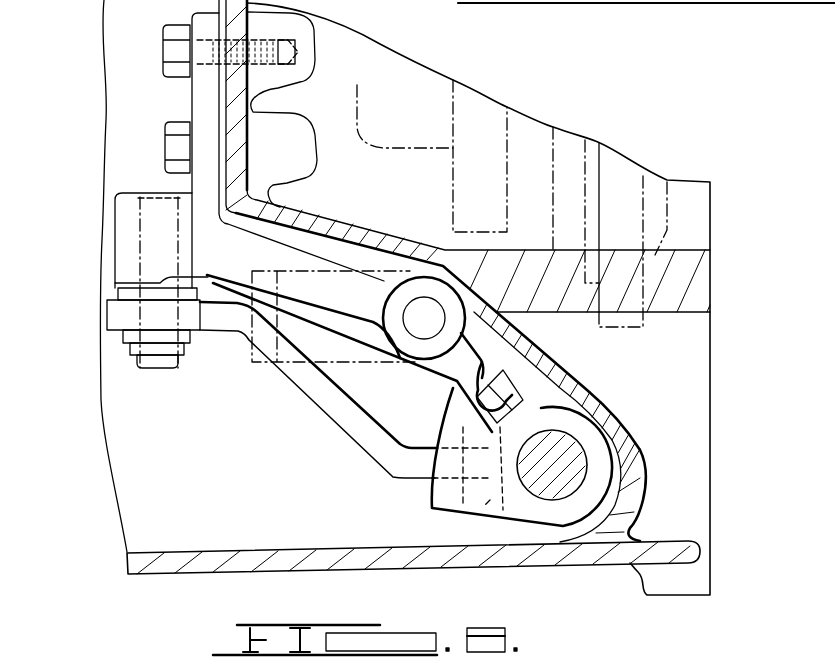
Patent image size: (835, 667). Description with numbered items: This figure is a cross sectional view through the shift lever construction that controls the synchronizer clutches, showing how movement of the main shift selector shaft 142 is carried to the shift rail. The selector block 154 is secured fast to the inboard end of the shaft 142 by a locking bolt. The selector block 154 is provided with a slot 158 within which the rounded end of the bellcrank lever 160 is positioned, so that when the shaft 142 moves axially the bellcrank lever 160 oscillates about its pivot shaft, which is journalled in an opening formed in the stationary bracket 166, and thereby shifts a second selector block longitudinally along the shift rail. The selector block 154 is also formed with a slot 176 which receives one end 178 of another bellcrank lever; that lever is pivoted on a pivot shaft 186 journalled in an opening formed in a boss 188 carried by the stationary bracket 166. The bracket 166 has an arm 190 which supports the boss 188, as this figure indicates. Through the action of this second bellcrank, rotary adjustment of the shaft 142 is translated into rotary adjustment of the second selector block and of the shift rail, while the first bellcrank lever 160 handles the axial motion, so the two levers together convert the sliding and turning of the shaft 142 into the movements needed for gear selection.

The main shift selector shaft 142 is at (572, 457).
The selector block 154 is at (592, 498).
The slot 158 is at (475, 517).
The bellcrank lever 160 is at (348, 435).
The stationary bracket 166 is at (118, 240).
The slot 176 is at (512, 390).
The end of bellcrank lever 178 is at (473, 397).
The pivot shaft 186 is at (419, 302).
The boss 188 is at (410, 348).
The arm 190 is at (237, 275).